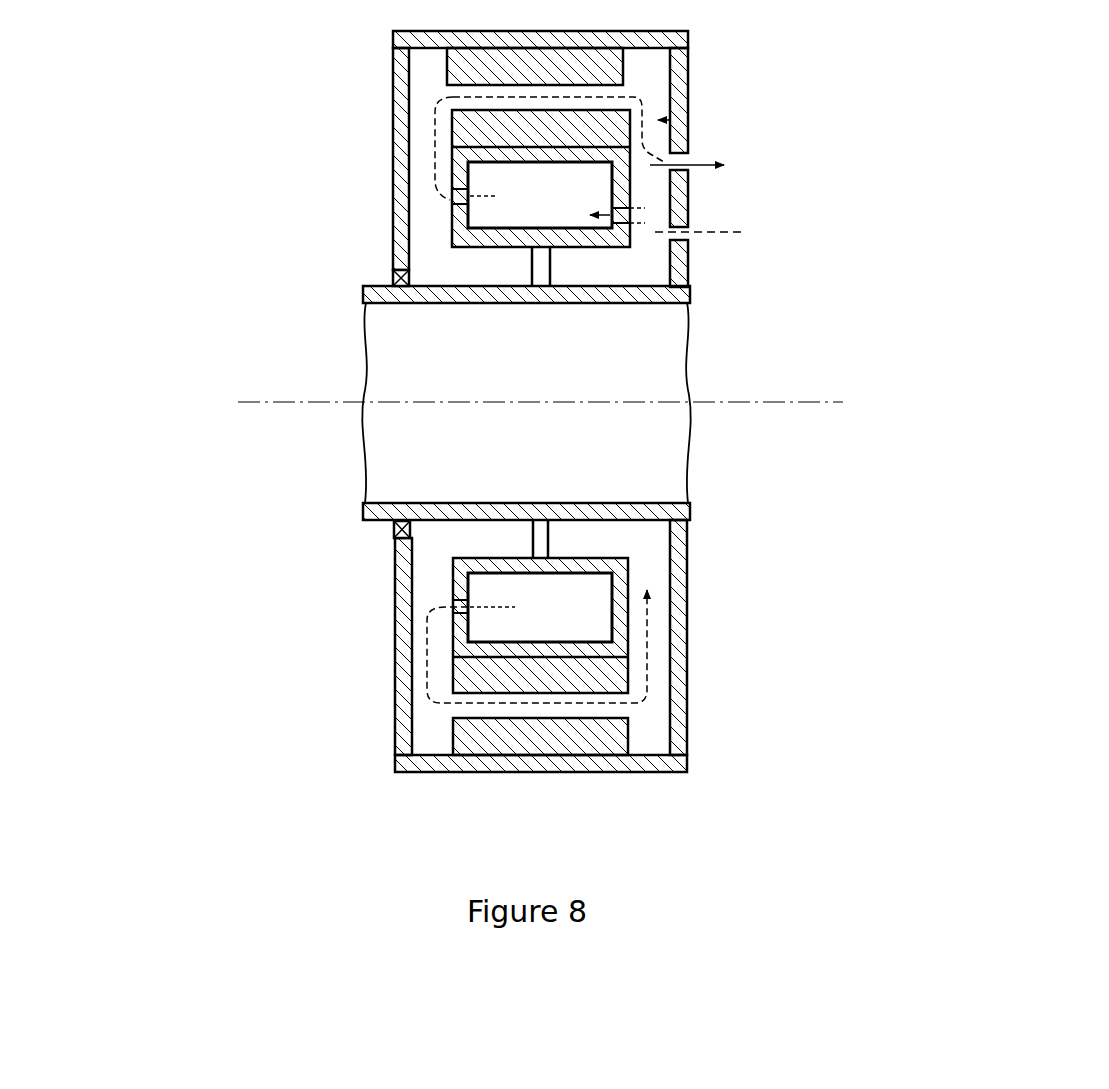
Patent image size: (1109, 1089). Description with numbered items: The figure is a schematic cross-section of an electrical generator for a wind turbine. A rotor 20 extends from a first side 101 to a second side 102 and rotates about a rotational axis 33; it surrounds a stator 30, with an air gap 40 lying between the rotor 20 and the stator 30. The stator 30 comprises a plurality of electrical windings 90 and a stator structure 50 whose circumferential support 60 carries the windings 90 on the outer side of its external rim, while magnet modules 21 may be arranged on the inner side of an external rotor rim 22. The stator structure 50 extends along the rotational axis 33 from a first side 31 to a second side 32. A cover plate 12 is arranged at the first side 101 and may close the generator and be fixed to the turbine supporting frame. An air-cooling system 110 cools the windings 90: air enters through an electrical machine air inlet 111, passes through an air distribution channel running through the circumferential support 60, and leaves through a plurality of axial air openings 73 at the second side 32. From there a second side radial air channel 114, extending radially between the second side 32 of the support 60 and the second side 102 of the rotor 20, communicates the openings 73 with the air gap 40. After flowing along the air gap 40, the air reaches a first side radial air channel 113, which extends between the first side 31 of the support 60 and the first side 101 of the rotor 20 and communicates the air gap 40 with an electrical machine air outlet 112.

The cover plate 12 is at (687, 66).
The rotor 20 is at (395, 645).
The magnet modules 21 is at (483, 740).
The external rotor rim 22 is at (640, 750).
The stator 30 is at (657, 635).
The first side 31 is at (687, 270).
The second side 32 is at (445, 220).
The rotational axis 33 is at (765, 400).
The air gap 40 is at (440, 100).
The stator structure 50 is at (552, 543).
The circumferential support 60 is at (647, 614).
The axial air openings 73 is at (447, 200).
The electrical windings 90 is at (647, 670).
The first side 101 is at (810, 438).
The second side 102 is at (428, 628).
The air-cooling system 110 is at (628, 163).
The electrical machine air inlet 111 is at (687, 232).
The electrical machine air outlet 112 is at (687, 160).
The first side radial air channel 113 is at (687, 118).
The second side radial air channel 114 is at (428, 150).